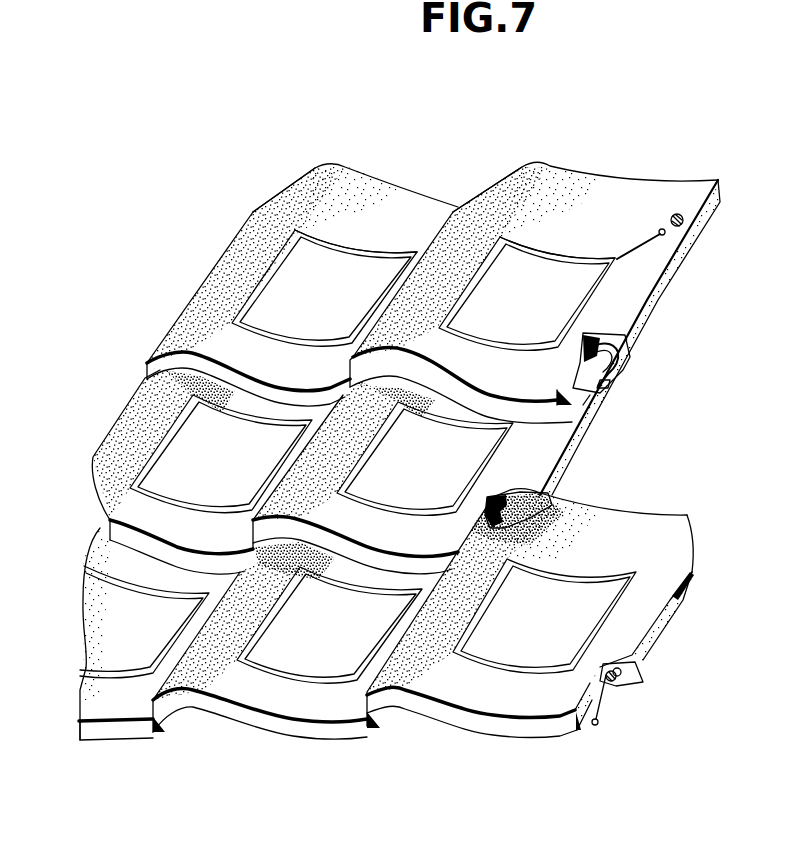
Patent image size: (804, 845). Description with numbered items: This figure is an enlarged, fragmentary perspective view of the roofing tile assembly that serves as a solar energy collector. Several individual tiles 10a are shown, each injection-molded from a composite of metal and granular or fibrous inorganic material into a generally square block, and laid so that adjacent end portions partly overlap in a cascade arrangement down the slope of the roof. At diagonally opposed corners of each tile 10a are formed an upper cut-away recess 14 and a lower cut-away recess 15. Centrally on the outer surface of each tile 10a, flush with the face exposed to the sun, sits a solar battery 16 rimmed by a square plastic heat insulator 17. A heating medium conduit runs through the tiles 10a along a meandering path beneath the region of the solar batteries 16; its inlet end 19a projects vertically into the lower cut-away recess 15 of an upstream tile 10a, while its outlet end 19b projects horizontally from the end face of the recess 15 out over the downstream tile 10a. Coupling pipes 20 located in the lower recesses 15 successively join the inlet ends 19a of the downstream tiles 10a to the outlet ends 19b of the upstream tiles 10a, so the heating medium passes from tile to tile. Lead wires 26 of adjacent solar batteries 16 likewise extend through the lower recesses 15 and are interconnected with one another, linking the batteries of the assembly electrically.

The tile 10a is at (349, 167).
The upper cut-away recess 14 is at (256, 207).
The square plastic heat insulator 17 is at (380, 250).
The solar battery 16 is at (287, 277).
The inlet end 19a is at (684, 226).
The lead wires 26 is at (664, 236).
The lower cut-away recess 15 is at (623, 352).
The coupling pipes 20 is at (594, 370).
The outlet end 19b is at (617, 687).